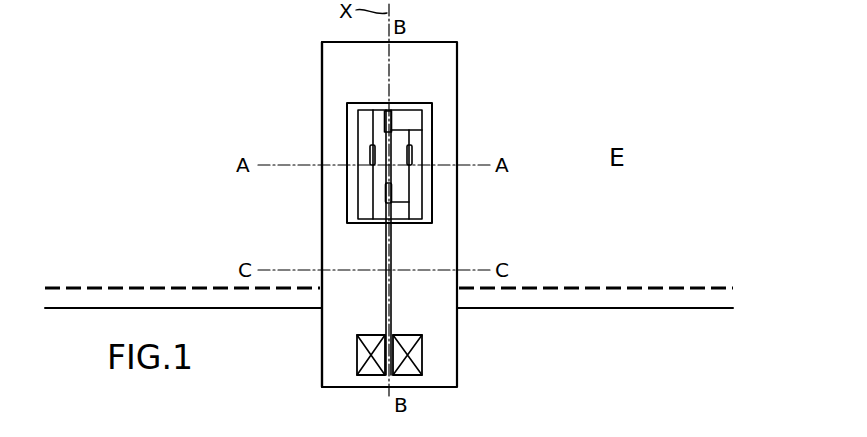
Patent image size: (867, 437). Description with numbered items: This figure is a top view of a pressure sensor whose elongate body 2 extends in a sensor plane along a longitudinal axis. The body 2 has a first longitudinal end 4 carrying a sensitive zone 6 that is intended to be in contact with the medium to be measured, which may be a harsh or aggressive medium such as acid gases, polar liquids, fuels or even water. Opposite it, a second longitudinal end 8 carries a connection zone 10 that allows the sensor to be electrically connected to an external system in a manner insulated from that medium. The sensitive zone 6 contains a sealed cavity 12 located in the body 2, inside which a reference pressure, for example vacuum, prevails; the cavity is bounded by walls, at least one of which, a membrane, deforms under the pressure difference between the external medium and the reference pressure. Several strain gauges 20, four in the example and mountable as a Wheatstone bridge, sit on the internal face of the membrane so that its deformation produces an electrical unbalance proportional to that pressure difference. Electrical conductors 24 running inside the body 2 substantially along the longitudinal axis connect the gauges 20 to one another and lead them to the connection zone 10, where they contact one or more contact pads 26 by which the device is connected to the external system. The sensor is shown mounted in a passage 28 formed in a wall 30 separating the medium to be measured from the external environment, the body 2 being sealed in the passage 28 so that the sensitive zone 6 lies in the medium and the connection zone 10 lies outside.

The body 2 is at (459, 67).
The first longitudinal end 4 is at (322, 158).
The sensitive zone 6 is at (433, 206).
The second longitudinal end 8 is at (439, 347).
The connection zone 10 is at (345, 345).
The sealed cavity 12 is at (349, 127).
The strain gauges 20 is at (386, 188).
The electrical conductors 24 is at (383, 312).
The contact pads 26 is at (407, 372).
The passage 28 is at (448, 302).
The wall 30 is at (618, 297).